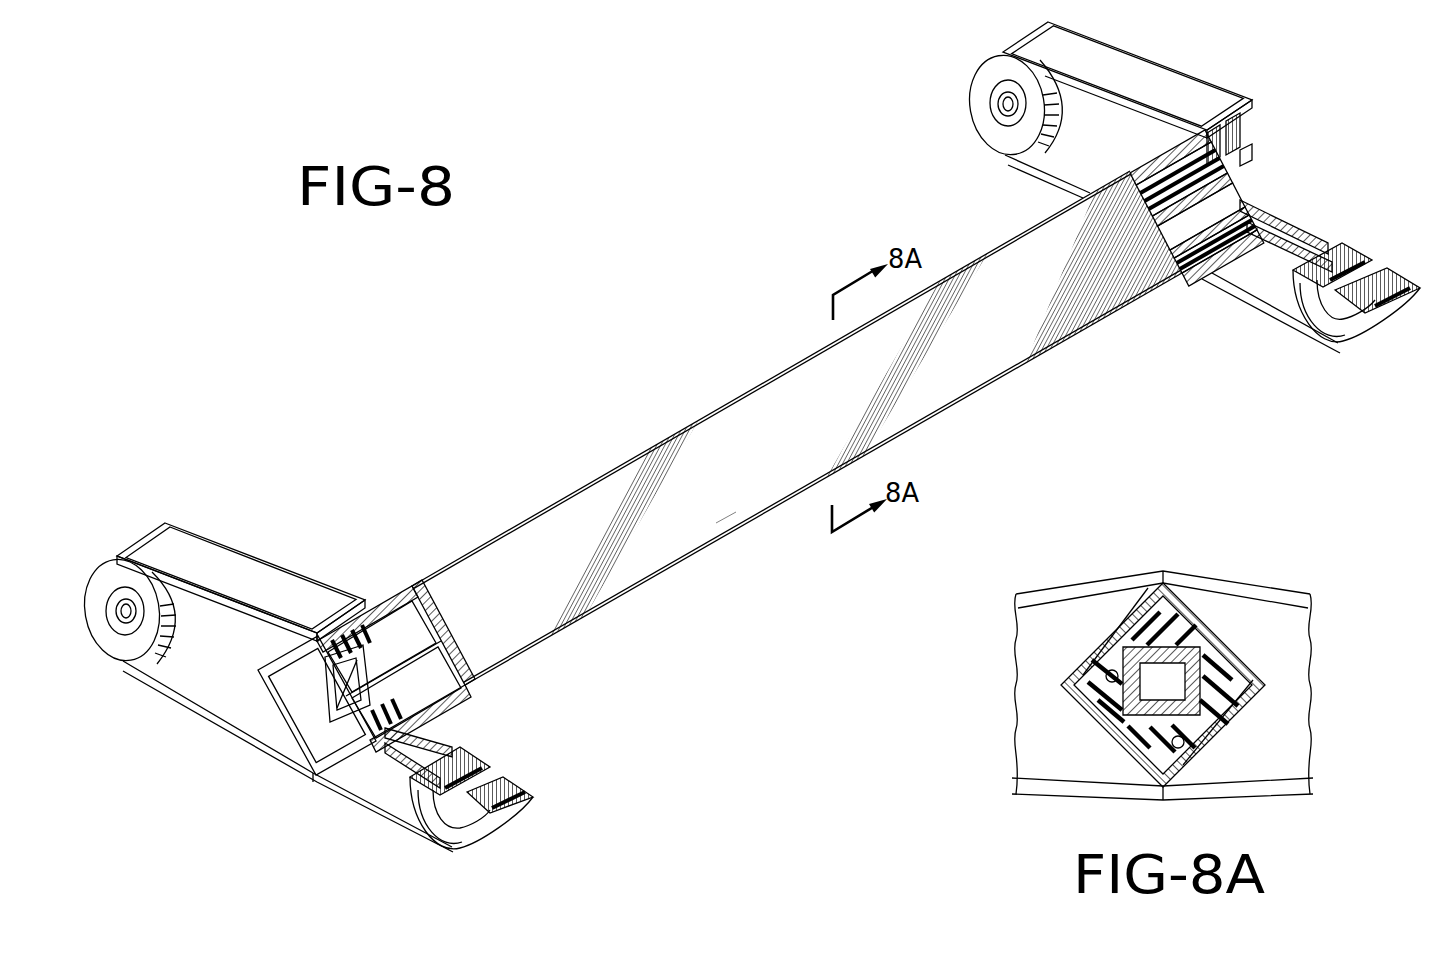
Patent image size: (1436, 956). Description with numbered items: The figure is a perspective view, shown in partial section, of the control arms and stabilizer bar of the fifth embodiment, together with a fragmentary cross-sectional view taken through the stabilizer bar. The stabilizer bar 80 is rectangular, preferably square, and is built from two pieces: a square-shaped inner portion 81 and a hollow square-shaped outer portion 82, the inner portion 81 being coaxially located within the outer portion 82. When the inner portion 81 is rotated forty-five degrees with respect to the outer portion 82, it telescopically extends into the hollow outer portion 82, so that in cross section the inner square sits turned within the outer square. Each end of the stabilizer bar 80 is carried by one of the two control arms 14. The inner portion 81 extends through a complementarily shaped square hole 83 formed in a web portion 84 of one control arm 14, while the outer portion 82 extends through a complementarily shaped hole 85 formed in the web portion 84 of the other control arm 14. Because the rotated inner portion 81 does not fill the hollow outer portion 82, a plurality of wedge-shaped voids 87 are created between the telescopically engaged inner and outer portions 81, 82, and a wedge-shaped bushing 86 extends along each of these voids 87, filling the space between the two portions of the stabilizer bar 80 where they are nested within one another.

In FIG. 8, the control arm 14 is at (226, 561).
In FIG. 8A, the control arm 14 is at (1055, 593).
In FIG. 8, the stabilizer bar 80 is at (719, 403).
In FIG. 8, the inner portion 81 is at (1258, 186).
In FIG. 8A, the inner portion 81 is at (1195, 718).
In FIG. 8, the outer portion 82 is at (720, 520).
In FIG. 8, the square hole 83 is at (1242, 156).
In FIG. 8, the web portion 84 is at (220, 672).
In FIG. 8A, the web portion 84 is at (1040, 650).
In FIG. 8, the hole 85 is at (362, 622).
In FIG. 8, the wedge-shaped bushing 86 is at (397, 640).
In FIG. 8A, the wedge-shaped bushing 86 is at (1230, 685).
In FIG. 8, the wedge-shaped void 87 is at (400, 600).
In FIG. 8A, the wedge-shaped void 87 is at (1093, 678).